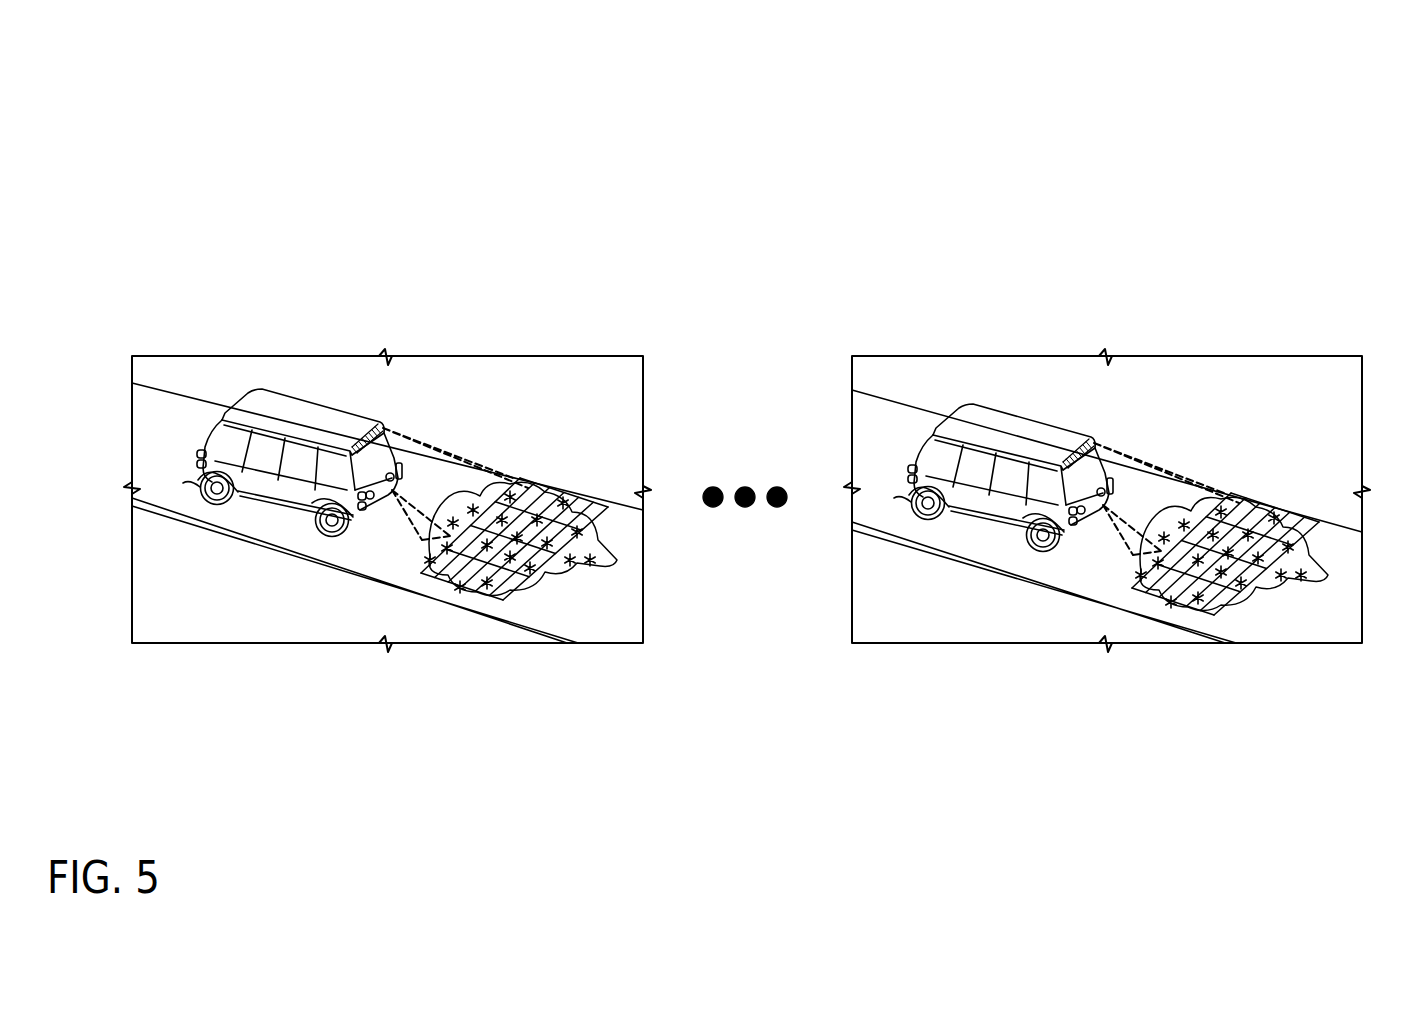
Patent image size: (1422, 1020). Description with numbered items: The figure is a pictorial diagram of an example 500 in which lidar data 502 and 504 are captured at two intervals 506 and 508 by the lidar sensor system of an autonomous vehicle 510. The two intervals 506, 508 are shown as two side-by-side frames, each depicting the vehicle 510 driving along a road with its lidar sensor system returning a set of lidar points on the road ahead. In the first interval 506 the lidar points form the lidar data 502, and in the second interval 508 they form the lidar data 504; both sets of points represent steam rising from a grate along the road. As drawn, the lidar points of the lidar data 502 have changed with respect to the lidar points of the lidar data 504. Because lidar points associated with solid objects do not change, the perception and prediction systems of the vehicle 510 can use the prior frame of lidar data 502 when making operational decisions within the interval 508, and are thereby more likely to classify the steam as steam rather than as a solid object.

The example 500 is at (1336, 68).
The lidar data 502 is at (527, 472).
The lidar data 504 is at (1259, 473).
The interval 506 is at (476, 335).
The interval 508 is at (1285, 343).
The autonomous vehicle 510 is at (374, 405).